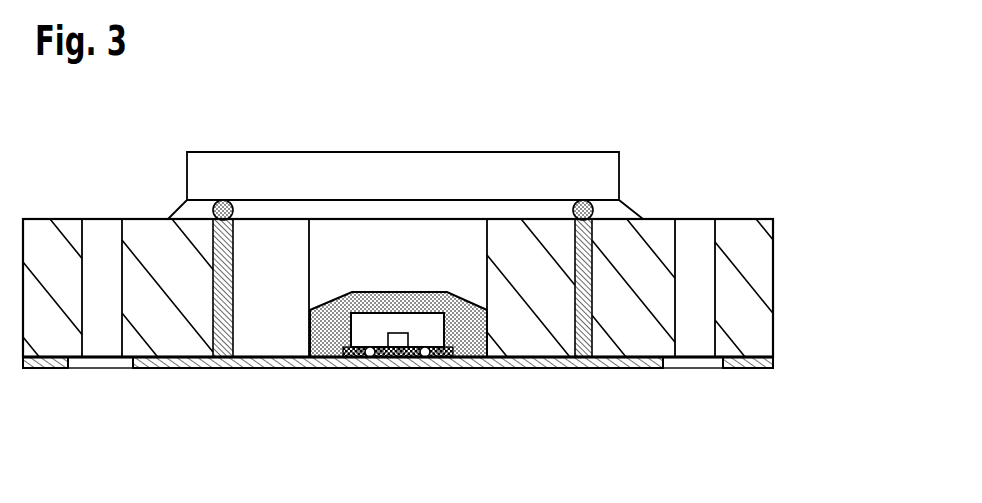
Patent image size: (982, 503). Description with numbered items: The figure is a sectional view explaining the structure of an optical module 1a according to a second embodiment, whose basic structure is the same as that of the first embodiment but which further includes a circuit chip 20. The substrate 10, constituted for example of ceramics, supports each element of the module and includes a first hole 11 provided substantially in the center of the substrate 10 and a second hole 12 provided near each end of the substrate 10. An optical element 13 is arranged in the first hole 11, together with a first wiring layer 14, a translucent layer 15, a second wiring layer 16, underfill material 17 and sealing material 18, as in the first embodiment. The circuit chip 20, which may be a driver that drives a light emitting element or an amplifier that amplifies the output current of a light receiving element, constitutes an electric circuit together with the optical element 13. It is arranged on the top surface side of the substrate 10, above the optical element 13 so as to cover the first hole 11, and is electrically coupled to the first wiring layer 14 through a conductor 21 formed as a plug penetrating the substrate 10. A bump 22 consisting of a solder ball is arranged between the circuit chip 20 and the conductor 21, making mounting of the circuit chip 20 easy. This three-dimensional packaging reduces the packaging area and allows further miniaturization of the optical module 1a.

The optical module 1a is at (778, 95).
The substrate 10 is at (773, 270).
The first hole 11 is at (320, 268).
The second hole 12 is at (99, 229).
The optical element 13 is at (373, 320).
The first wiring layer 14 is at (533, 352).
The translucent layer 15 is at (773, 359).
The second wiring layer 16 is at (651, 369).
The underfill material 17 is at (443, 368).
The sealing material 18 is at (323, 368).
The circuit chip 20 is at (465, 163).
The conductor 21 is at (213, 300).
The bump 22 is at (224, 200).